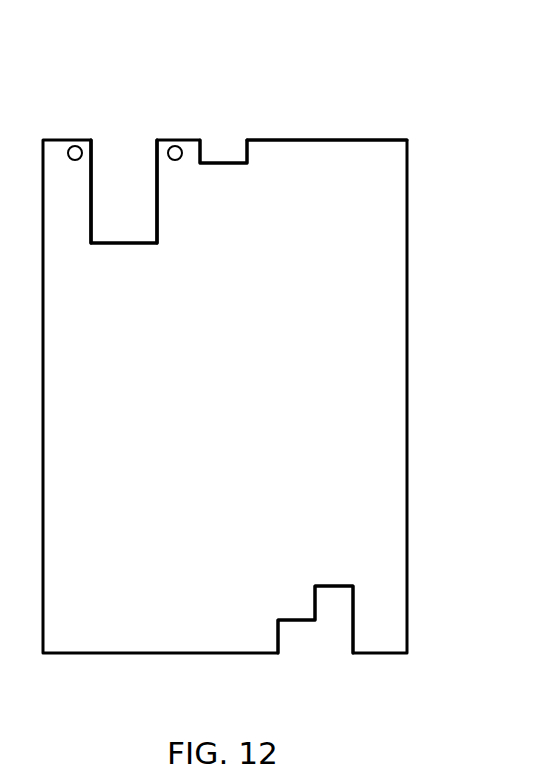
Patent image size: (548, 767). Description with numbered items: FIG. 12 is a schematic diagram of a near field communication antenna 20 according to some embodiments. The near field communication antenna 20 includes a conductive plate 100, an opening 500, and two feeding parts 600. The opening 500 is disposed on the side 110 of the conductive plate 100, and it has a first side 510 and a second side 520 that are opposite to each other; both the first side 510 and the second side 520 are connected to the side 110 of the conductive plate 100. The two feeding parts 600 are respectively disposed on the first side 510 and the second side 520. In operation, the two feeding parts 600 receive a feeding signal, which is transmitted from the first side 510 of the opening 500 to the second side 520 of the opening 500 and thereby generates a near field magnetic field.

The near field communication antenna 20 is at (389, 70).
The conductive plate 100 is at (384, 314).
The side 110 is at (327, 142).
The opening 500 is at (114, 151).
The first side 510 is at (92, 227).
The second side 520 is at (157, 227).
The feeding parts 600 is at (75, 160).